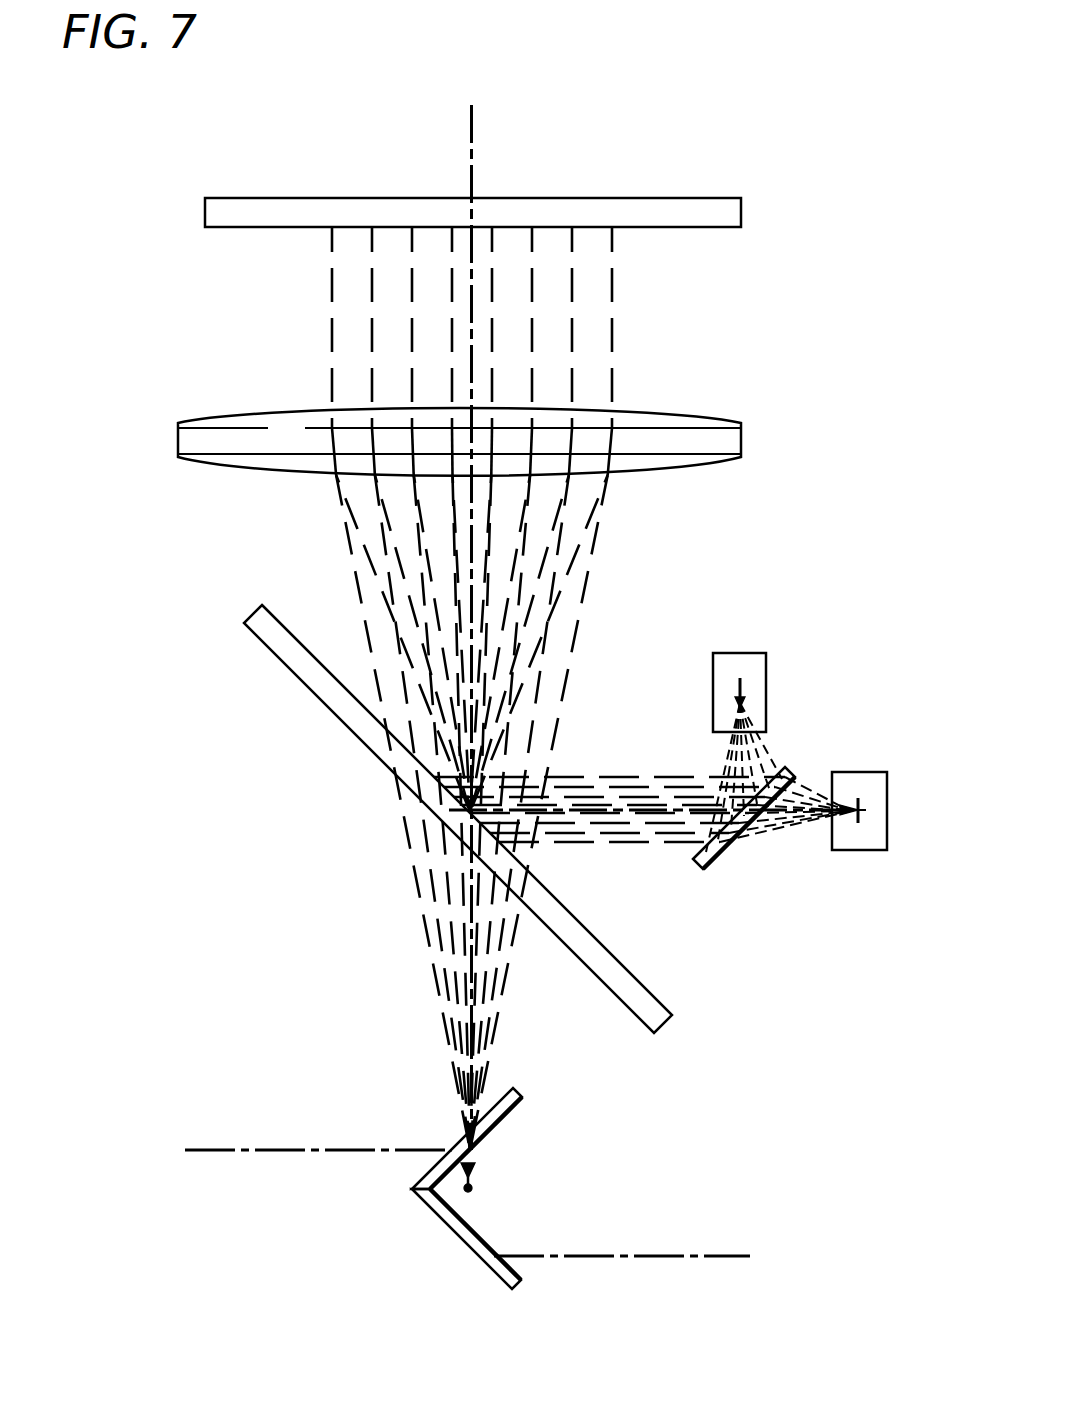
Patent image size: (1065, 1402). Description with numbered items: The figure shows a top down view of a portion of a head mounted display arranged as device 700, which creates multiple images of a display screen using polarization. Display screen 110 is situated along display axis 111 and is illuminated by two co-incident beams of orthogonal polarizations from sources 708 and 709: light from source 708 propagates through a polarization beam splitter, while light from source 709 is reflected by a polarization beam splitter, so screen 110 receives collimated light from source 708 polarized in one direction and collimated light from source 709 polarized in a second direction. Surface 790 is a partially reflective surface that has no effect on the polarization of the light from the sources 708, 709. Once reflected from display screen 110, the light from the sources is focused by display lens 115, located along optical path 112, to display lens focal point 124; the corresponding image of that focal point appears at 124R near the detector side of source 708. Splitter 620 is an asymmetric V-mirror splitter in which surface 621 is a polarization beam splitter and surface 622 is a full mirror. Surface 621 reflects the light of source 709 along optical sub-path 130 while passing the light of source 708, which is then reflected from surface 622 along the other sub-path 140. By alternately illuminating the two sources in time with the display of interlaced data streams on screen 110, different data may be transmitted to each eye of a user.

The device 700 is at (156, 126).
The display axis 111 is at (470, 117).
The display screen 110 is at (663, 198).
The display lens 115 is at (178, 437).
The surface 790 is at (303, 683).
The source 709 is at (757, 653).
The source 708 is at (878, 851).
The reflected image of sample point 124R is at (868, 806).
The optical path 112 is at (467, 1038).
The reference plane 140 is at (272, 1152).
The optical sub-path 130 is at (650, 1258).
The splitter 620 is at (416, 1216).
The polarization beam splitter 621 is at (423, 1170).
The full mirror 622 is at (497, 1285).
The display lens focal point 124 is at (471, 1195).